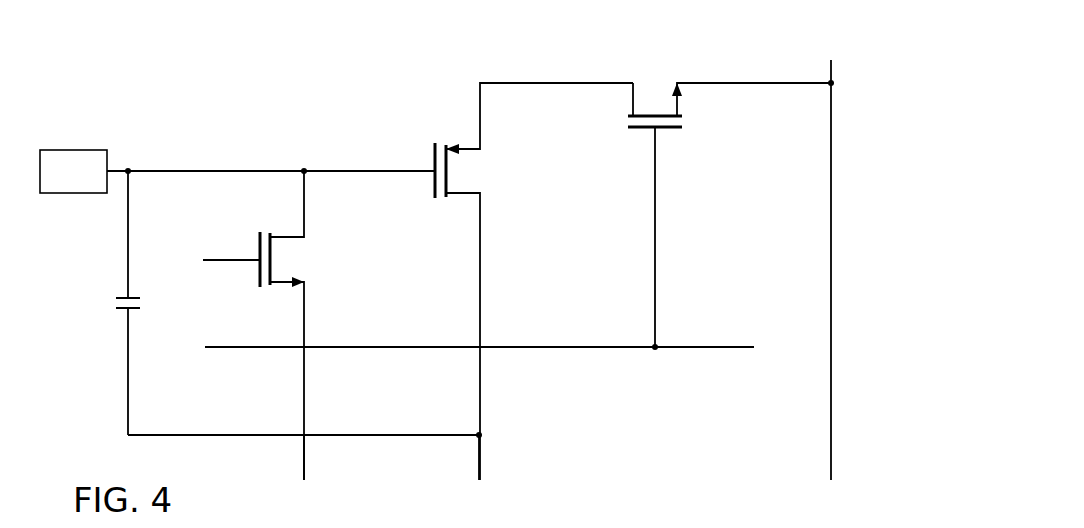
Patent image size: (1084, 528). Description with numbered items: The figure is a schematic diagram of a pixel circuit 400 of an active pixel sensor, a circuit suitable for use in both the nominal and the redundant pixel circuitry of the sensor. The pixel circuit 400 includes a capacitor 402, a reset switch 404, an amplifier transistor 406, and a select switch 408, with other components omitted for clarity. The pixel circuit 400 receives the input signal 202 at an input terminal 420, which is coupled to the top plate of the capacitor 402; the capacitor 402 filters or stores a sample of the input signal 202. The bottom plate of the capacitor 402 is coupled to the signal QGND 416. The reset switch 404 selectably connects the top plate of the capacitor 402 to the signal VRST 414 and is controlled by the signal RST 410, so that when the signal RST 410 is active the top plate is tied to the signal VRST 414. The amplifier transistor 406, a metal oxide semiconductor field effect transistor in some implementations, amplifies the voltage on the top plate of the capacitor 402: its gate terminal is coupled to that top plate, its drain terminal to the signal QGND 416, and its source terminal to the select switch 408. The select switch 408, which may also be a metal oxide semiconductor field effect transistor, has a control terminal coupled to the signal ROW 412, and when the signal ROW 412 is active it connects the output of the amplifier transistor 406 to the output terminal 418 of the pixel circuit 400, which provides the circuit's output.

The pixel circuit 400 is at (254, 83).
The input terminal 420 is at (72, 150).
The input signal 202 is at (203, 171).
The capacitor 402 is at (117, 300).
The reset switch 404 is at (258, 272).
The signal RST 410 is at (233, 258).
The amplifier transistor 406 is at (434, 160).
The select switch 408 is at (670, 130).
The signal ROW 412 is at (257, 350).
The signal VRST 414 is at (301, 457).
The signal QGND 416 is at (478, 455).
The output terminal 418 is at (832, 280).